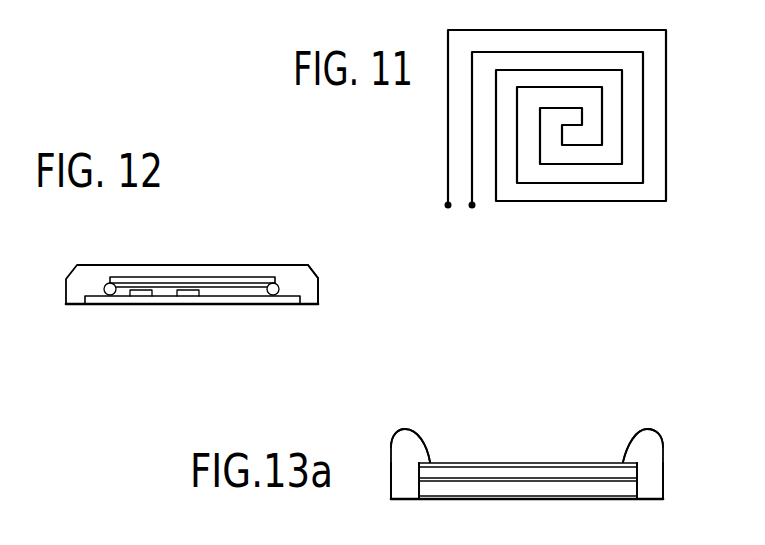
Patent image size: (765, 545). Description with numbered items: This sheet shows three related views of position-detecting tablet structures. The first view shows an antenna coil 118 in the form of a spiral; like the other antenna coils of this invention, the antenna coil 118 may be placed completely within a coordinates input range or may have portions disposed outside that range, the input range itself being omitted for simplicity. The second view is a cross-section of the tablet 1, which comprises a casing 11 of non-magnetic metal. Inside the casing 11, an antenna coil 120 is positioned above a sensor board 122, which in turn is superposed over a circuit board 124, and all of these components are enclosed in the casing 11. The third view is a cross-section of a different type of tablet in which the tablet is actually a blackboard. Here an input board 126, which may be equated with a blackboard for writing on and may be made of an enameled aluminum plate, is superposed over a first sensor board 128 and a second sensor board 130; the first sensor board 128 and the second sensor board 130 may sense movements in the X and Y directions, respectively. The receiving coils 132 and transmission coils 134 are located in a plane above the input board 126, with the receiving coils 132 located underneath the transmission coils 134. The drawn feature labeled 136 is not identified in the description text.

In FIG. 11, the antenna coil 118 is at (662, 101).
In FIG. 12, the tablet 1 is at (253, 240).
In FIG. 12, the casing 11 is at (318, 287).
In FIG. 12, the antenna coil 120 is at (95, 272).
In FIG. 12, the sensor board 122 is at (187, 278).
In FIG. 12, the circuit board 124 is at (225, 304).
In FIG. 13a, the input board 126 is at (532, 463).
In FIG. 13a, the first sensor board 128 is at (623, 473).
In FIG. 13a, the second sensor board 130 is at (588, 497).
In FIG. 13a, the receiving coils 132 is at (404, 451).
In FIG. 13a, the transmission coils 134 is at (405, 438).
In FIG. 13a, the post wall 136 is at (398, 473).